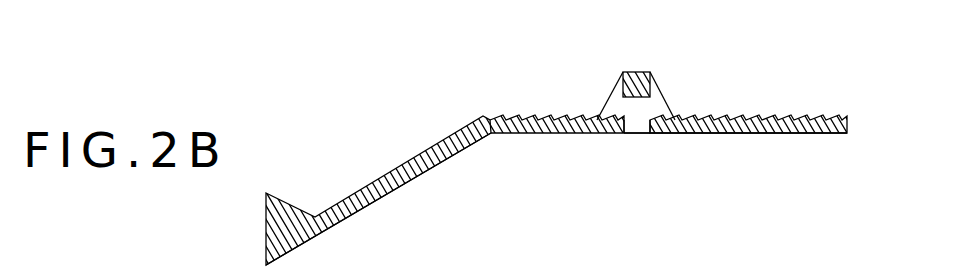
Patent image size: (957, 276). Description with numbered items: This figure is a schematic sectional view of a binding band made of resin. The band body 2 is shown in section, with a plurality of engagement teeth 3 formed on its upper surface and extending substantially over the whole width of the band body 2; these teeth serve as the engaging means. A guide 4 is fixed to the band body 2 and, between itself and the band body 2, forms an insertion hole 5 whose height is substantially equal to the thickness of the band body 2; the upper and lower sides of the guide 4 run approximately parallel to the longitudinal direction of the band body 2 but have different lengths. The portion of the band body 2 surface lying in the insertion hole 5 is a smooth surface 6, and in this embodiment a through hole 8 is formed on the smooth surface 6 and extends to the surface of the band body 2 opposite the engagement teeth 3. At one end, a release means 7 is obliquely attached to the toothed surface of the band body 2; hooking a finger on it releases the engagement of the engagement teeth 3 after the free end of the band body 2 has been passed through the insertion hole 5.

The band body 2 is at (777, 133).
The engagement teeth 3 is at (502, 115).
The guide 4 is at (640, 72).
The insertion hole 5 is at (600, 103).
The smooth surface 6 is at (602, 135).
The release means 7 is at (358, 190).
The through hole 8 is at (641, 150).